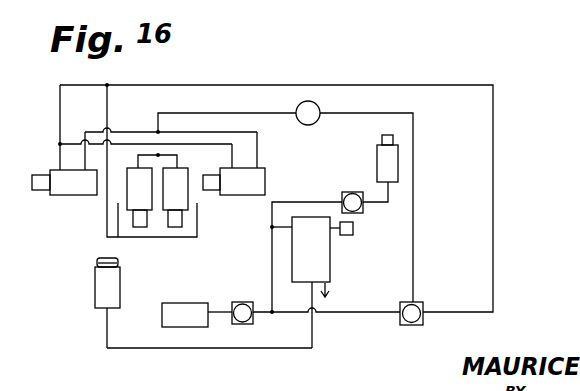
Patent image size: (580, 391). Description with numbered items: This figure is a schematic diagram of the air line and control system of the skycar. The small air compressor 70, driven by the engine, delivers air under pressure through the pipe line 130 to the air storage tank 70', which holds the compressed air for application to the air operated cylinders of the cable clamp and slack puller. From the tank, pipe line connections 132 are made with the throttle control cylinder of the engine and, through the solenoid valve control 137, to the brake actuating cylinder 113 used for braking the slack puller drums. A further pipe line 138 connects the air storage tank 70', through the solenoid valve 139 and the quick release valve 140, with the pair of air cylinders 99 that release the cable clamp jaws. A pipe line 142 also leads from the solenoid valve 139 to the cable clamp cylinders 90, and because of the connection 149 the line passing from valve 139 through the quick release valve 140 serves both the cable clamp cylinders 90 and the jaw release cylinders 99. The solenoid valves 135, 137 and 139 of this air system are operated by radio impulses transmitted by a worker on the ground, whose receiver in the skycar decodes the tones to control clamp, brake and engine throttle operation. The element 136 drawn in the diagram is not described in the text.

The connection 149 is at (158, 155).
The quick release valve 140 is at (313, 108).
The cable clamp cylinder 90 is at (68, 186).
The air cylinder 99 is at (138, 197).
The solenoid valve 135 is at (428, 151).
The pipe line connections 132 is at (303, 202).
The pump 136 is at (272, 262).
The air storage tank 70' is at (337, 282).
The pipe line 138 is at (368, 312).
The solenoid valve 139 is at (412, 312).
The pipe line 142 is at (494, 199).
The air compressor 70 is at (127, 303).
The brake actuating cylinder 113 is at (186, 306).
The solenoid valve control 137 is at (250, 316).
The pipe line 130 is at (253, 349).